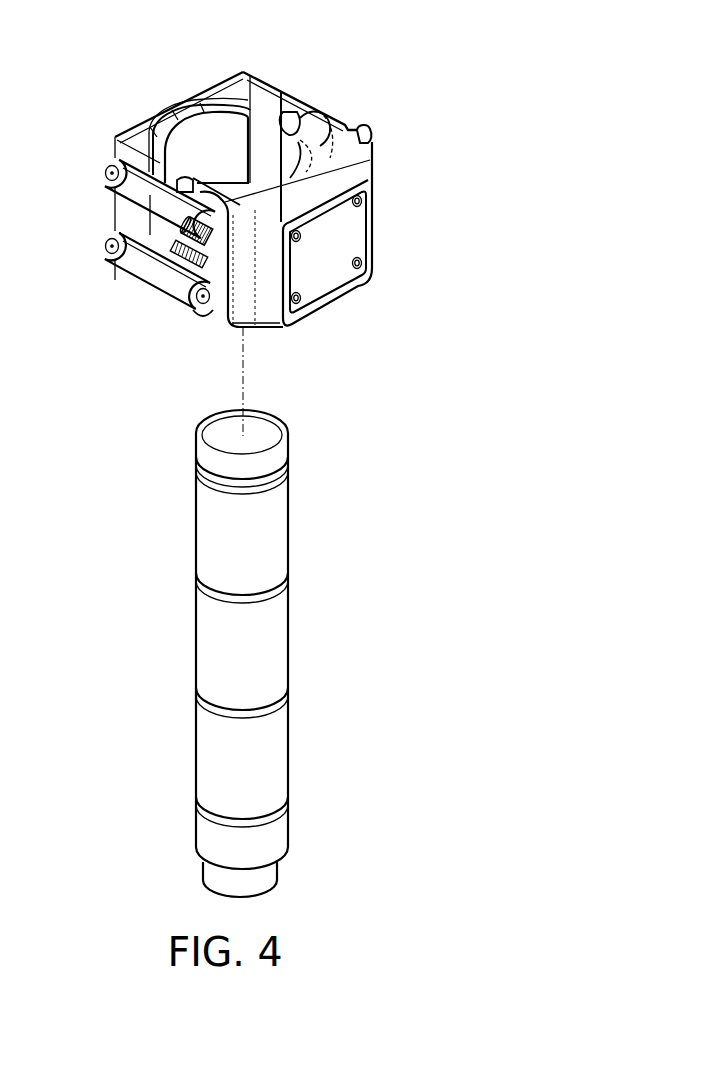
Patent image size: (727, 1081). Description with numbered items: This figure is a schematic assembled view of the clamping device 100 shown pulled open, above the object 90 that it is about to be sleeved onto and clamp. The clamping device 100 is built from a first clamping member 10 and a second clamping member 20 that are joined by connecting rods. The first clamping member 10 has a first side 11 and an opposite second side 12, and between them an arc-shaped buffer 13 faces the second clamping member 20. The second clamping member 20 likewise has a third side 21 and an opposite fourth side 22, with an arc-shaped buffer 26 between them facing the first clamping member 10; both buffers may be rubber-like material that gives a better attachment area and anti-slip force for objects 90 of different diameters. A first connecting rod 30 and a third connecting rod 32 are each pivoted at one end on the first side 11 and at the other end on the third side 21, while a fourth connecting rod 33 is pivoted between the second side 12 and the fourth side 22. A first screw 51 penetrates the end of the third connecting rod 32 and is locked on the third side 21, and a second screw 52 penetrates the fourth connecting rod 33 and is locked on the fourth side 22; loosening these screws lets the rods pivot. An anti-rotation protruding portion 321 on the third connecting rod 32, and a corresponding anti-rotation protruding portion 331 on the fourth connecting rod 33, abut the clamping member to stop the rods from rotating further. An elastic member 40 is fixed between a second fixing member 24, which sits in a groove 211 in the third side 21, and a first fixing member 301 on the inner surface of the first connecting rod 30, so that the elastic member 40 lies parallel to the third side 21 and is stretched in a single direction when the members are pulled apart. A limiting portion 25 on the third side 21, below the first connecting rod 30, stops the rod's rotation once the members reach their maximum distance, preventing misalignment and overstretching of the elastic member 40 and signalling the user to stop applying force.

The clamping device 100 is at (369, 60).
The first clamping member 10 is at (164, 108).
The first side 11 is at (112, 210).
The second side 12 is at (258, 76).
The arc-shaped buffer 13 is at (188, 148).
The second clamping member 20 is at (357, 154).
The third side 21 is at (284, 328).
The fourth side 22 is at (343, 122).
The second fixing member 24 is at (260, 330).
The limiting portion 25 is at (200, 318).
The arc-shaped buffer 26 is at (340, 177).
The first connecting rod 30 is at (133, 267).
The first fixing member 301 is at (178, 305).
The third connecting rod 32 is at (133, 190).
The anti-rotation protruding portion 321 is at (106, 169).
The fourth connecting rod 33 is at (283, 110).
The anti-rotation protruding portion 331 is at (311, 115).
The elastic member 40 is at (245, 328).
The first screw 51 is at (150, 285).
The second screw 52 is at (368, 128).
The groove 211 is at (223, 322).
The object 90 is at (280, 524).